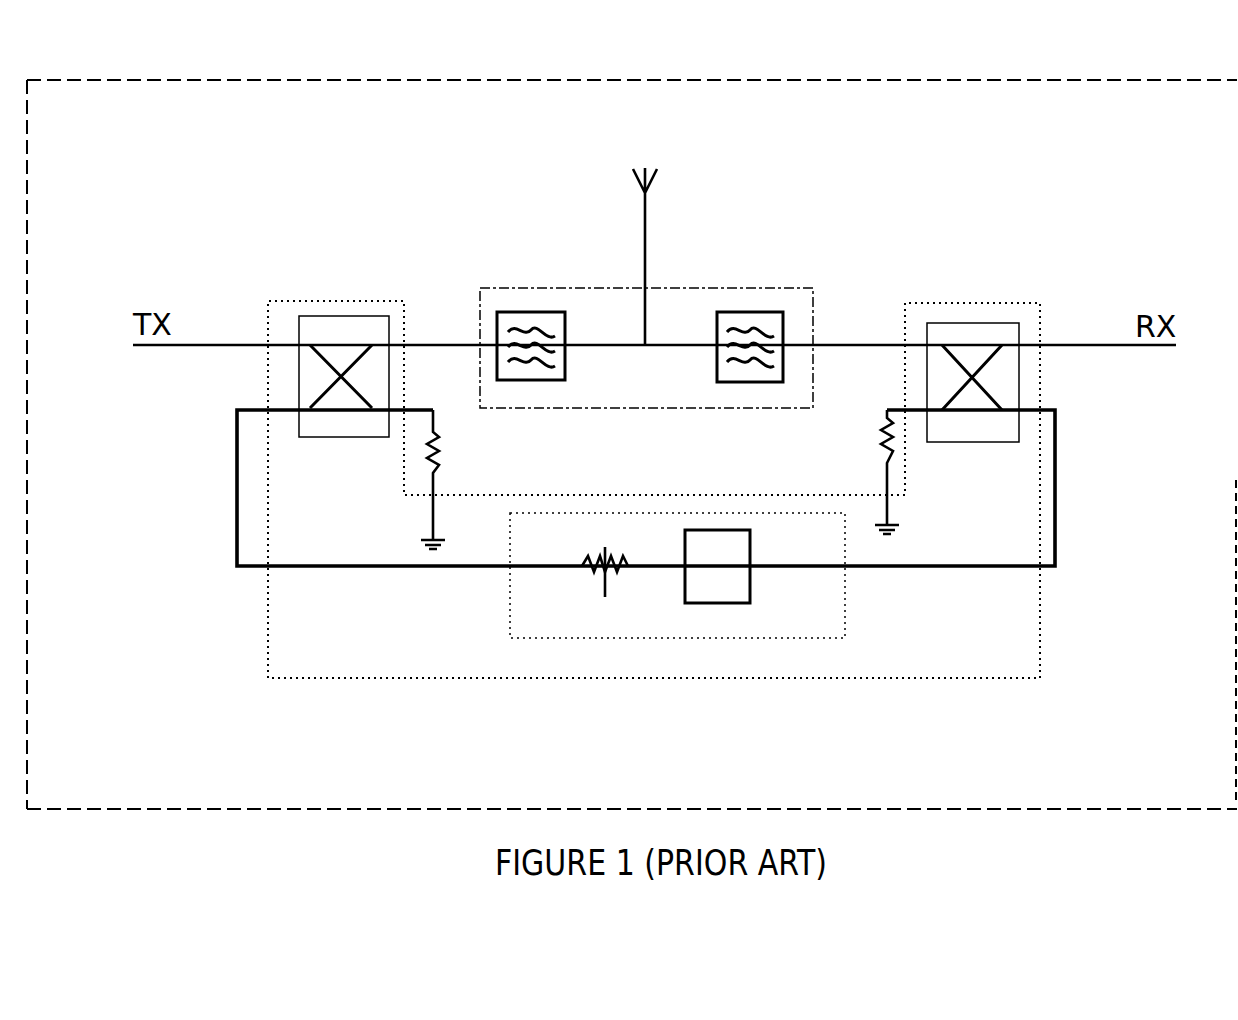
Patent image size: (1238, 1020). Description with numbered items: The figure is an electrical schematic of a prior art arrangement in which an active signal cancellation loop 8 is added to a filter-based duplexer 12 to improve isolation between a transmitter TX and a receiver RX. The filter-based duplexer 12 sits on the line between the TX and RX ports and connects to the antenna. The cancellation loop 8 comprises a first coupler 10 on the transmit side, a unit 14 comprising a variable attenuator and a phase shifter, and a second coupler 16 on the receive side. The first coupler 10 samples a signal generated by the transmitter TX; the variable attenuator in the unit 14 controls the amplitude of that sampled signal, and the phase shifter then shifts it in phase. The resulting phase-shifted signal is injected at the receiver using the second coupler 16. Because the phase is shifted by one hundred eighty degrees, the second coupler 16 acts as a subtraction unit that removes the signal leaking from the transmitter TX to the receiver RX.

The active signal cancellation loop 8 is at (677, 678).
The first coupler 10 is at (345, 315).
The filter-based duplexer 12 is at (813, 288).
The unit comprising a variable attenuator and a phase shifter 14 is at (677, 513).
The second coupler 16 is at (973, 320).